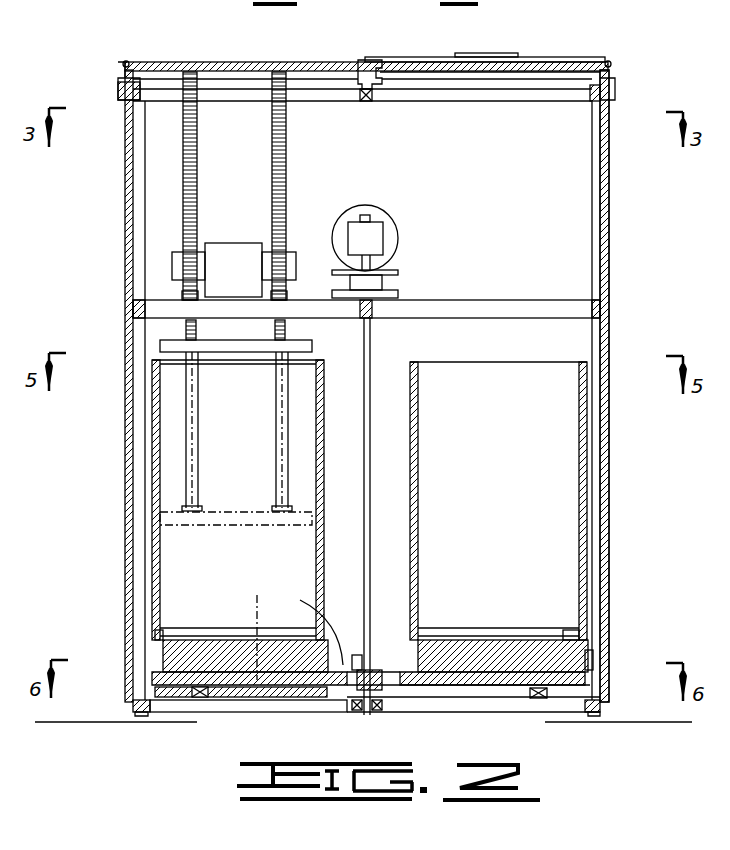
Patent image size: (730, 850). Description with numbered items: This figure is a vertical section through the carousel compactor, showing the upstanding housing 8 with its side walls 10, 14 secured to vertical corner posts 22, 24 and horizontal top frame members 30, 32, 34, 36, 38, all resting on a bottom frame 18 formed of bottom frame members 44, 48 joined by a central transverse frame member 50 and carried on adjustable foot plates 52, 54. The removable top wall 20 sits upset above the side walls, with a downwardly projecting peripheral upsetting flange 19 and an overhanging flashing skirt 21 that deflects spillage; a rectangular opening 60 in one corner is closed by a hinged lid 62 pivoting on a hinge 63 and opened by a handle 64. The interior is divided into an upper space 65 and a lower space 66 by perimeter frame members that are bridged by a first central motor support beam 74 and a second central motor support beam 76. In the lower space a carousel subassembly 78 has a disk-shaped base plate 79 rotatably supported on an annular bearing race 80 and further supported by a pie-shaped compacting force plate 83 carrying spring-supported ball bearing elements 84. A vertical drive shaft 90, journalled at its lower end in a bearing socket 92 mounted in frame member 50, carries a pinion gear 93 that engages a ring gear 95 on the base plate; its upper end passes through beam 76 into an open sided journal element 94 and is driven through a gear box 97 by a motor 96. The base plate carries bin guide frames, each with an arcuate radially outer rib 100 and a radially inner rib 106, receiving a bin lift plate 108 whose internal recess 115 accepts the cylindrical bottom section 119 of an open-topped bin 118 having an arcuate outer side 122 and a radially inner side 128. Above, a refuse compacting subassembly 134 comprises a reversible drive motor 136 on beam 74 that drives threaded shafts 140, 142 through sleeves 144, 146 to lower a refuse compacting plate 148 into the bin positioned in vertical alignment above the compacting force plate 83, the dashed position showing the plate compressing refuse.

The housing 8 is at (618, 223).
The side wall 10 is at (126, 200).
The side wall 14 is at (609, 135).
The bottom frame 18 is at (198, 728).
The peripheral upsetting flange 19 is at (126, 62).
The top wall 20 is at (228, 62).
The flashing skirt 21 is at (118, 82).
The corner post 22 is at (138, 135).
The corner post 24 is at (592, 170).
The top frame member 30 is at (118, 90).
The top frame member 32 is at (302, 96).
The top frame member 34 is at (364, 104).
The top frame member 36 is at (470, 94).
The top frame member 38 is at (590, 98).
The bottom frame member 44 is at (140, 700).
The bottom frame member 48 is at (592, 712).
The central transverse frame member 50 is at (450, 712).
The foot plate 52 is at (140, 716).
The foot plate 54 is at (600, 716).
The rectangular opening 60 is at (366, 60).
The hinged rectangular lid 62 is at (426, 70).
The hinge 63 is at (545, 57).
The handle 64 is at (470, 53).
The upper space 65 is at (475, 176).
The lower space 66 is at (458, 351).
The first central motor support beam 74 is at (482, 300).
The second central motor support beam 76 is at (372, 320).
The carousel subassembly 78 is at (350, 700).
The base plate 79 is at (425, 688).
The annular bearing race 80 is at (200, 688).
The compacting force plate 83 is at (276, 712).
The spring-supported ball bearing element 84 is at (256, 625).
The drive shaft 90 is at (370, 480).
The bearing socket 92 is at (366, 712).
The pinion gear 93 is at (356, 665).
The open sided journal element 94 is at (382, 285).
The ring gear 95 is at (307, 624).
The motor 96 is at (340, 242).
The gear box 97 is at (352, 225).
The radially outer rib 100 is at (590, 660).
The radially inner rib 106 is at (160, 660).
The bin lift plate 108 is at (180, 660).
The internal recess 115 is at (160, 628).
The open-topped bin 118 is at (160, 550).
The bottom section 119 is at (225, 640).
The radially outer arcuate side 122 is at (580, 460).
The radially inner side 128 is at (420, 440).
The refuse compacting subassembly 134 is at (170, 262).
The drive motor 136 is at (250, 278).
The threaded shaft 140 is at (193, 136).
The threaded shaft 142 is at (278, 190).
The sleeve 144 is at (183, 296).
The sleeve 146 is at (285, 322).
The refuse compacting plate 148 is at (170, 345).